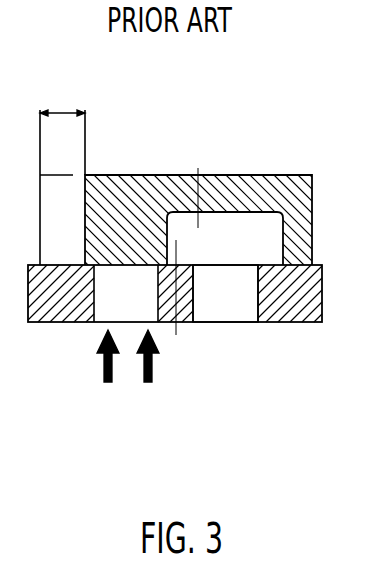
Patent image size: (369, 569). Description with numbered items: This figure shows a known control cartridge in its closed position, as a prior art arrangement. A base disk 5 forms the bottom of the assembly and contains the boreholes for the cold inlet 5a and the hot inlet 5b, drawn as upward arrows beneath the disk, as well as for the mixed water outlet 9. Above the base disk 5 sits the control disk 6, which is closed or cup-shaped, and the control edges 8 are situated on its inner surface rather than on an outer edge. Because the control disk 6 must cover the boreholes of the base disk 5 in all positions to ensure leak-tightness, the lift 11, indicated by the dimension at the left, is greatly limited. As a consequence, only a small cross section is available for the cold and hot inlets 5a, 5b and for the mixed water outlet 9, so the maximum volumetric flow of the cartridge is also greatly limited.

The base disk 5 is at (288, 313).
The cold inlet 5a is at (103, 372).
The hot inlet 5b is at (153, 372).
The control disk 6 is at (147, 175).
The control edge 8 is at (283, 238).
The mixed water outlet 9 is at (233, 312).
The lift 11 is at (63, 110).